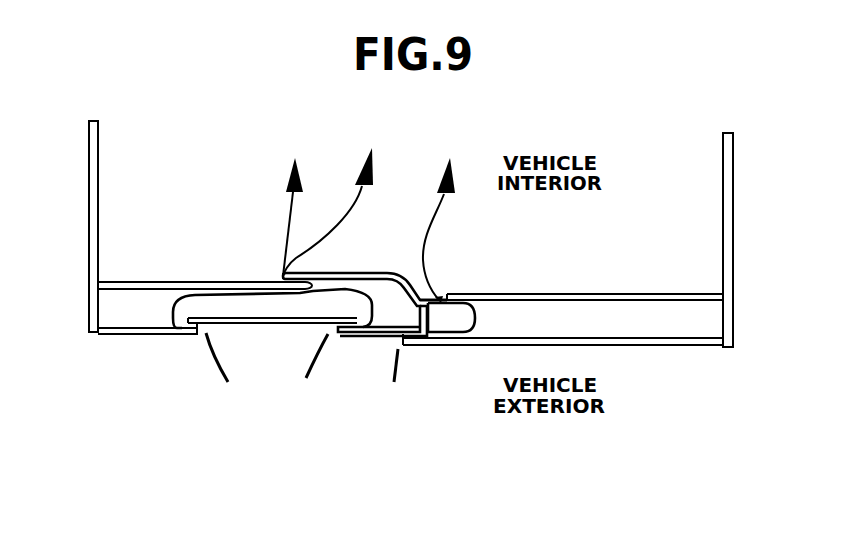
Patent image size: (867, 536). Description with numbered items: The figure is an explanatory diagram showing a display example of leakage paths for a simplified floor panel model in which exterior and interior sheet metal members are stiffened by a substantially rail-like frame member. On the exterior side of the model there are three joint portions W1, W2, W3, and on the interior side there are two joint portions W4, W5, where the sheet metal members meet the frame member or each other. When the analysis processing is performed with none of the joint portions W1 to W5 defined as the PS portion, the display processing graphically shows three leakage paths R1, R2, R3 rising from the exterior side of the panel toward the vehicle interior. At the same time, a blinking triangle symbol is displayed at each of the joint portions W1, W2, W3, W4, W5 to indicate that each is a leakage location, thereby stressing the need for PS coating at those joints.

The leakage path R1 is at (296, 204).
The leakage path R2 is at (335, 202).
The leakage path R3 is at (445, 220).
The joint portion W1 is at (388, 352).
The joint portion W2 is at (332, 340).
The joint portion W3 is at (198, 338).
The joint portion W4 is at (441, 298).
The joint portion W5 is at (274, 276).